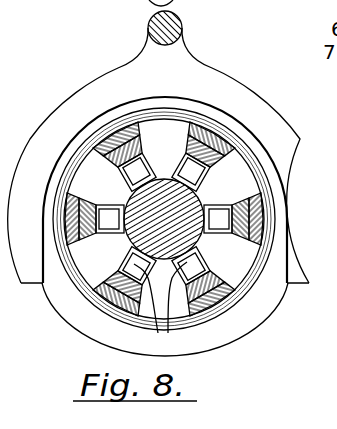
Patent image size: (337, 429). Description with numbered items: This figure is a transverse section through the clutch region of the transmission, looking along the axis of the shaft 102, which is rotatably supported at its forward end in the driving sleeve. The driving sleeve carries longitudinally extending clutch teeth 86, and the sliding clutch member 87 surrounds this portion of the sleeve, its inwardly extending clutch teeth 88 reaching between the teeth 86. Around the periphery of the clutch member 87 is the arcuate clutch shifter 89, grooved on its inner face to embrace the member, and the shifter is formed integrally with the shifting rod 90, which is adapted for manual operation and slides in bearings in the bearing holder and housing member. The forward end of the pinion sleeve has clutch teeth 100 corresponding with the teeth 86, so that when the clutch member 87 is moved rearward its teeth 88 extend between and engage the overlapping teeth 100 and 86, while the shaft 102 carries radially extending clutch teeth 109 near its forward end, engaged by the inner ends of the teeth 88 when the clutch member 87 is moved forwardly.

The clutch teeth 86 is at (72, 196).
The sliding clutch member 87 is at (237, 318).
The clutch teeth 88 is at (235, 173).
The arcuate clutch shifter 89 is at (227, 88).
The shifting rod 90 is at (148, 25).
The clutch teeth 100 is at (78, 266).
The shaft 102 is at (197, 243).
The clutch teeth 109 is at (160, 308).